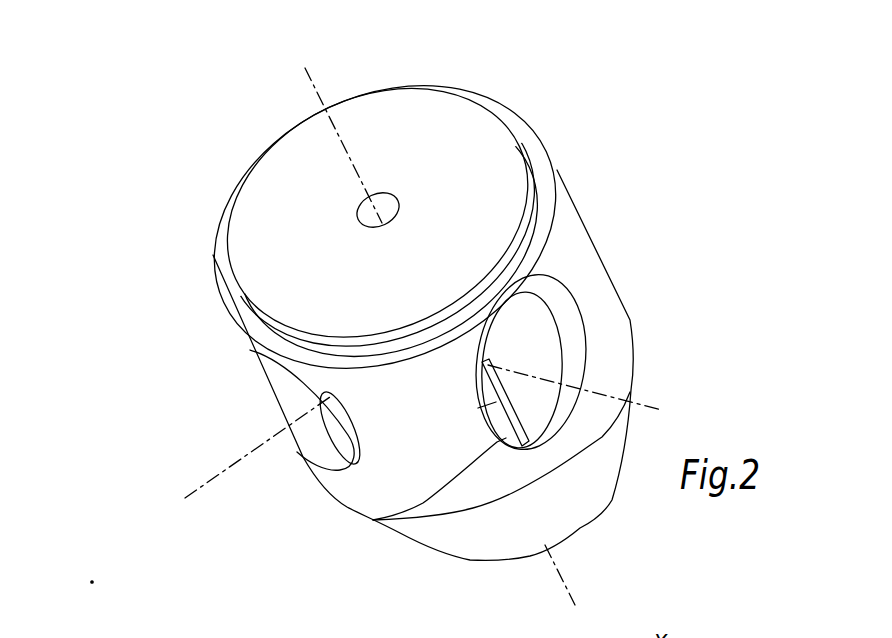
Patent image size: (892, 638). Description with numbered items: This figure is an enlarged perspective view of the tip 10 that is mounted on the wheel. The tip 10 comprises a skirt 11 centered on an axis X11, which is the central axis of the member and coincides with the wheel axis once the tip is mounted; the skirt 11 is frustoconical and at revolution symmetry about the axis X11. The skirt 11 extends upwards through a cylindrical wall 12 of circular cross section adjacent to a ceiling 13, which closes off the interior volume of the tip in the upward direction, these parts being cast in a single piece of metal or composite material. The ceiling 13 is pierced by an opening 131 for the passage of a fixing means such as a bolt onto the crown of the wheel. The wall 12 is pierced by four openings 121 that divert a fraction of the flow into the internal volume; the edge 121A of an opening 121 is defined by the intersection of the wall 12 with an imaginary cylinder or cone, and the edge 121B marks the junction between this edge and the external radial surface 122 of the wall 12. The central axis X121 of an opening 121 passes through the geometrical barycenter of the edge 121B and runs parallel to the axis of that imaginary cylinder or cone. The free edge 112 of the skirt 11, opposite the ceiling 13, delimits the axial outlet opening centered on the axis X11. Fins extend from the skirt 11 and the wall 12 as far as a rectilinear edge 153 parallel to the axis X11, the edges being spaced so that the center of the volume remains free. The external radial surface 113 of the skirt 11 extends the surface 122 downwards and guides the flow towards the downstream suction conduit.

The tip 10 is at (641, 196).
The skirt 11 is at (507, 527).
The free edge 112 is at (579, 530).
The external radial surface 113 is at (463, 538).
The cylindrical wall 12 is at (360, 480).
The opening 121 is at (541, 359).
The edge of the opening 121A is at (554, 297).
The edge of the junction 121B is at (582, 340).
The external radial surface 122 is at (605, 289).
The ceiling 13 is at (442, 127).
The opening 131 is at (357, 213).
The edge 153 is at (507, 422).
The central axis of the opening X121 is at (427, 431).
The axis of the skirt X11 is at (573, 580).